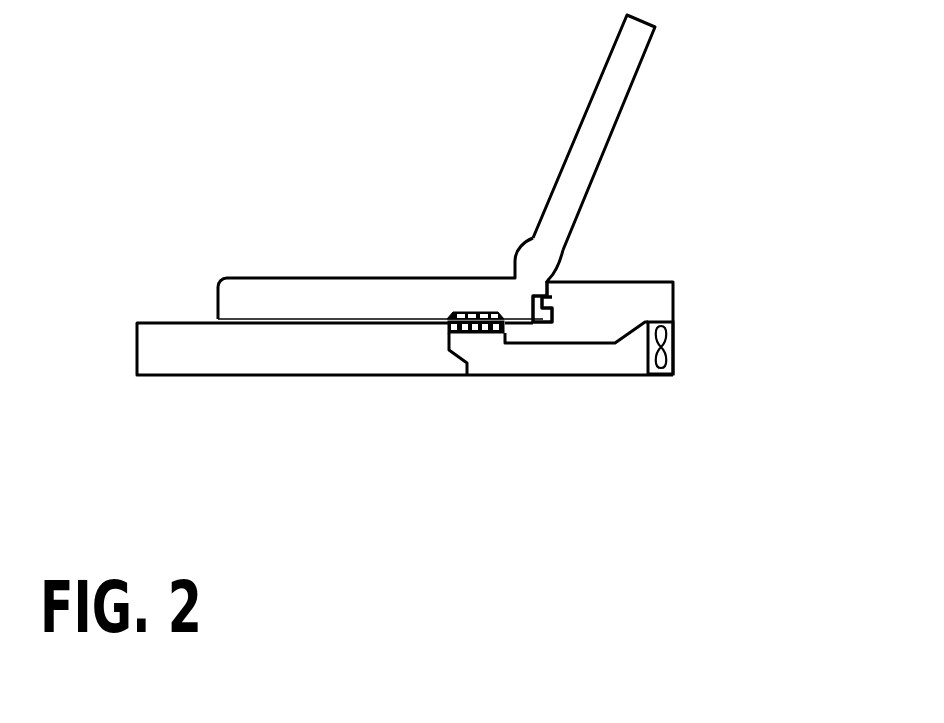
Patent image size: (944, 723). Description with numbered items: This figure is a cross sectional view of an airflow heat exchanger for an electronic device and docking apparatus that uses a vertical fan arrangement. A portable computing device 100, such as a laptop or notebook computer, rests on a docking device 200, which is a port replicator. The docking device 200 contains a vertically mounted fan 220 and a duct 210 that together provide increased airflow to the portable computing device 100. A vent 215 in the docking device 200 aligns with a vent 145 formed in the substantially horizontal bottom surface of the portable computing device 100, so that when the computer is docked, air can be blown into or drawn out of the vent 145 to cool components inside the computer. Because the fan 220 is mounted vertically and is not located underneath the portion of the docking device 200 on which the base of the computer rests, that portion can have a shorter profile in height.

The portable computing device 100 is at (294, 250).
The vent 145 is at (465, 310).
The docking device 200 is at (347, 379).
The duct 210 is at (552, 354).
The vent 215 is at (480, 331).
The fan 220 is at (673, 332).